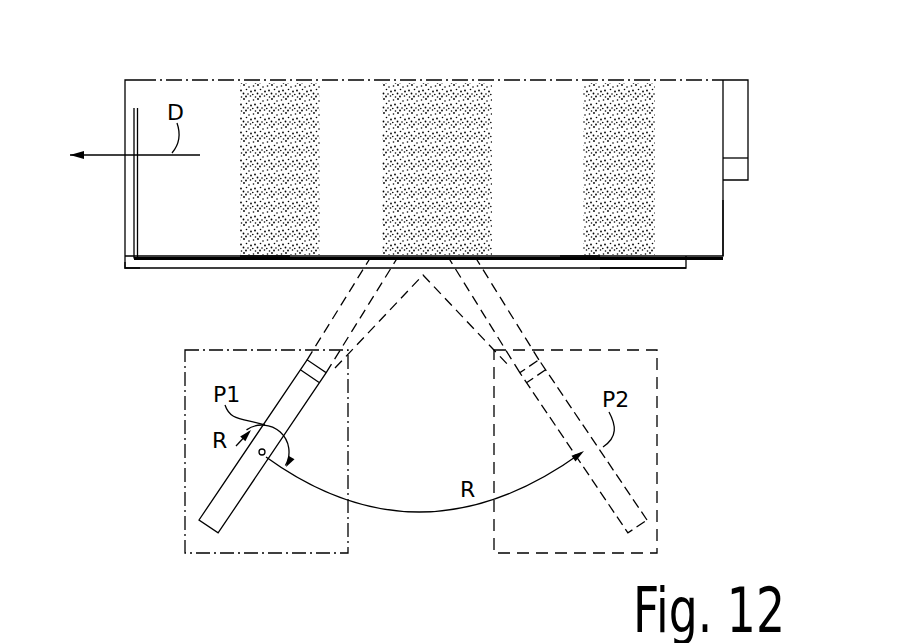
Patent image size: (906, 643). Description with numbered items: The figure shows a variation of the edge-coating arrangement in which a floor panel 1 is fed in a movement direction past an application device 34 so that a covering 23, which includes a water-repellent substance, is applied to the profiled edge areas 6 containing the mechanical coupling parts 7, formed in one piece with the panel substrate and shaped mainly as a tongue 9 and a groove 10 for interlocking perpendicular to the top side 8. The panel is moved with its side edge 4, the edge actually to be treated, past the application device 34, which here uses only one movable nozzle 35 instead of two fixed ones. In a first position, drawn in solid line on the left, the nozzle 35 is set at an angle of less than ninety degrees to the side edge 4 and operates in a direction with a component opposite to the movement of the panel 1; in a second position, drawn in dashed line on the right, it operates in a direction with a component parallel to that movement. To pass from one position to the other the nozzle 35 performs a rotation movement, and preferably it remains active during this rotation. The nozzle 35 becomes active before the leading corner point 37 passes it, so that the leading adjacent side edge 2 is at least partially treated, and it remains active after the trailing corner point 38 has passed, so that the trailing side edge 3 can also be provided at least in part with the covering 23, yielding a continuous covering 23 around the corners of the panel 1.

The floor panel 1 is at (510, 91).
The side edge 2 is at (124, 204).
The side edge 3 is at (725, 158).
The side edge 4 is at (607, 258).
The profiled edge areas 6 is at (685, 349).
The mechanical coupling parts 7 is at (578, 263).
The top side 8 is at (333, 178).
The tongue 9 is at (262, 258).
The groove 10 is at (732, 102).
The covering 23 is at (160, 267).
The application device 34 is at (348, 440).
The nozzle 35 is at (223, 507).
The leading corner point 37 is at (128, 265).
The trailing corner point 38 is at (728, 260).